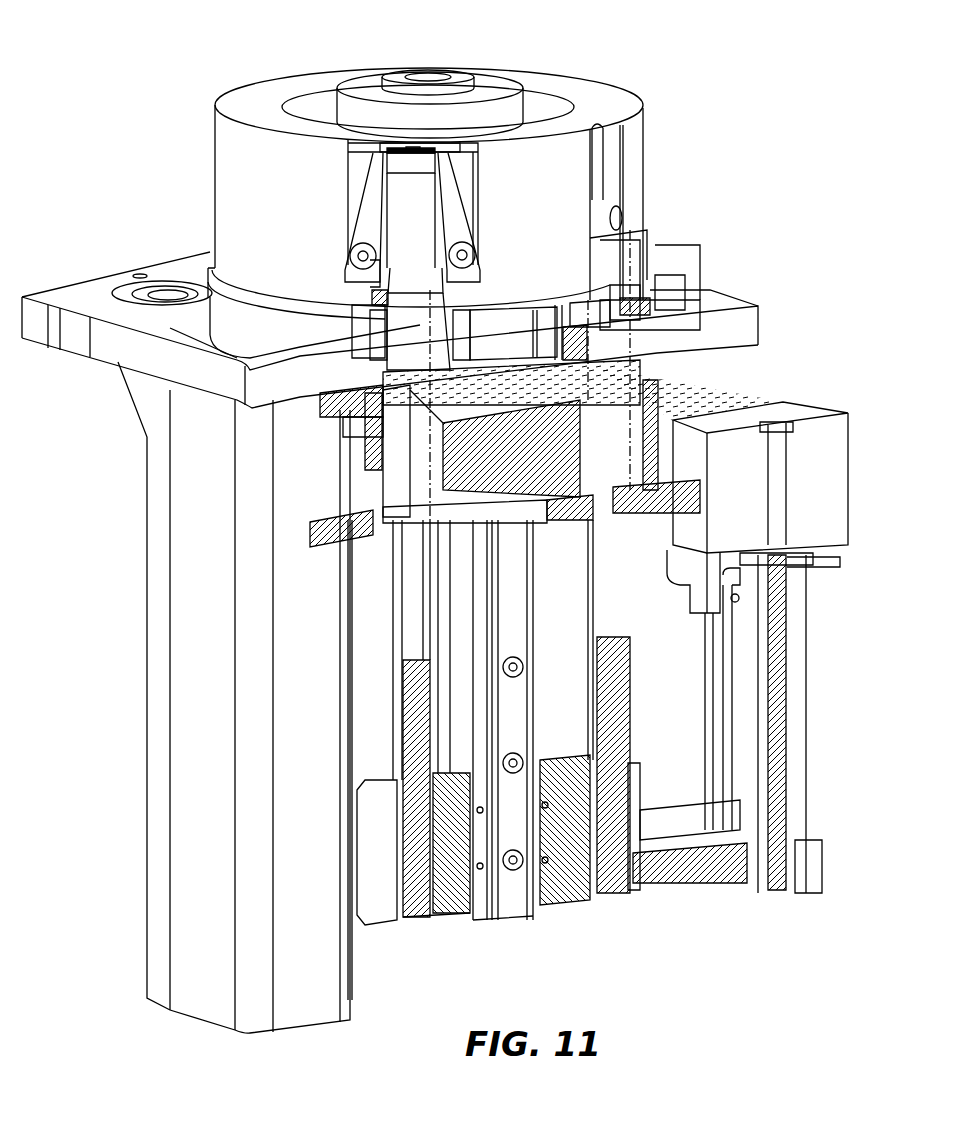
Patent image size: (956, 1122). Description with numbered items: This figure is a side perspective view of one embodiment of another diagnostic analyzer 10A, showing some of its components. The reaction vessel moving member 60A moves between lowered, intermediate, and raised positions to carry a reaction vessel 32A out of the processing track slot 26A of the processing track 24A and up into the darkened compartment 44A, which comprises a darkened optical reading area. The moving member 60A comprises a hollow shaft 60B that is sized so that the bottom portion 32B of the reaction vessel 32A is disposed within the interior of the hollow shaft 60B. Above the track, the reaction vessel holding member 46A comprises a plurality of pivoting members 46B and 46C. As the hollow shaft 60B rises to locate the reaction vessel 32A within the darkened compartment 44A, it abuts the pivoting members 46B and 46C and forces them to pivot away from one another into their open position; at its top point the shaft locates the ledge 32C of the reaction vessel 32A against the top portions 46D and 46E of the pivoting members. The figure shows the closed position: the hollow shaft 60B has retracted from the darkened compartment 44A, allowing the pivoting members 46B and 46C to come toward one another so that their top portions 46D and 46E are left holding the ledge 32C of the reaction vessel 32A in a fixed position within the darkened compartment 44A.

The diagnostic analyzer 10A is at (782, 152).
The darkened compartment 44A is at (280, 137).
The reaction vessel 32A is at (455, 205).
The bottom portion of the reaction vessel 32B is at (350, 252).
The ledge of the reaction vessel 32C is at (335, 178).
The reaction vessel holding member 46A is at (452, 190).
The pivoting member 46B is at (357, 213).
The pivoting member 46C is at (422, 210).
The top portion of pivoting member 46D is at (373, 153).
The top portion of pivoting member 46E is at (460, 165).
The reaction vessel moving member 60A is at (645, 282).
The processing track 24A is at (725, 390).
The processing track slot 26A is at (420, 403).
The hollow shaft 60B is at (633, 686).